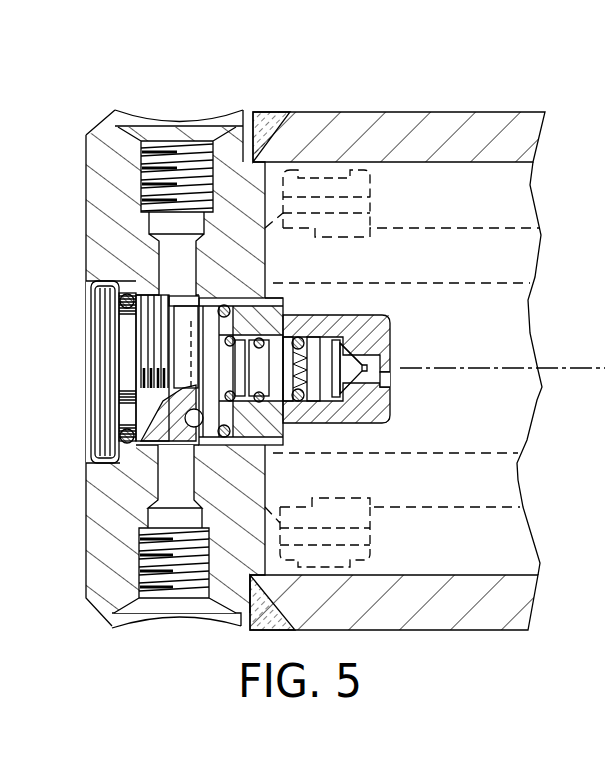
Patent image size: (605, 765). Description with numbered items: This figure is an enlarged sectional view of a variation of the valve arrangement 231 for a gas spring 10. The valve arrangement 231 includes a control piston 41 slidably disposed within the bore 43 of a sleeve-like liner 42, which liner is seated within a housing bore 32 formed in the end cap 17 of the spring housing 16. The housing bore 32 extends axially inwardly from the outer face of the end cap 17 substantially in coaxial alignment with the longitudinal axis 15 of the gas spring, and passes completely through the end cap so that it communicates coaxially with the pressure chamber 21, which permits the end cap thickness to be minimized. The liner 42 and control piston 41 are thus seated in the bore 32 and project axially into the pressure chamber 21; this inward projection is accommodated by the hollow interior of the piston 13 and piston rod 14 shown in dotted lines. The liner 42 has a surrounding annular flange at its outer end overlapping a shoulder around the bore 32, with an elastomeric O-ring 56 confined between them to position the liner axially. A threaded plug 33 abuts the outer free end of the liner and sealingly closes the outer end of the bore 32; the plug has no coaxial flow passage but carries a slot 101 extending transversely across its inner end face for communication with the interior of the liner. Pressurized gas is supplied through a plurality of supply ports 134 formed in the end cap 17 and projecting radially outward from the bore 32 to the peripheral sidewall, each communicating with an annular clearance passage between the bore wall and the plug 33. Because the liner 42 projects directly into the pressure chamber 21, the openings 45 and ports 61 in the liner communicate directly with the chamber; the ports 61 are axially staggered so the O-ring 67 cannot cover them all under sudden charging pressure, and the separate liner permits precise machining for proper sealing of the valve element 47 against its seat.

The gas spring 10 is at (306, 97).
The piston 13 is at (358, 172).
The piston rod 14 is at (515, 255).
The longitudinal axis 15 is at (585, 368).
The spring housing 16 is at (488, 132).
The end cap 17 is at (95, 540).
The pressure chamber 21 is at (515, 197).
The housing bore 32 is at (262, 286).
The threaded plug 33 is at (127, 368).
The control piston 41 is at (342, 340).
The liner 42 is at (375, 303).
The bore of the liner 43 is at (342, 400).
The opening 45 is at (383, 373).
The valve element 47 is at (345, 378).
The O-ring 56 is at (205, 443).
The port 61 is at (268, 440).
The O-ring 67 is at (273, 353).
The slot 101 is at (177, 427).
The supply ports 134 is at (180, 152).
The valve arrangement 231 is at (413, 326).